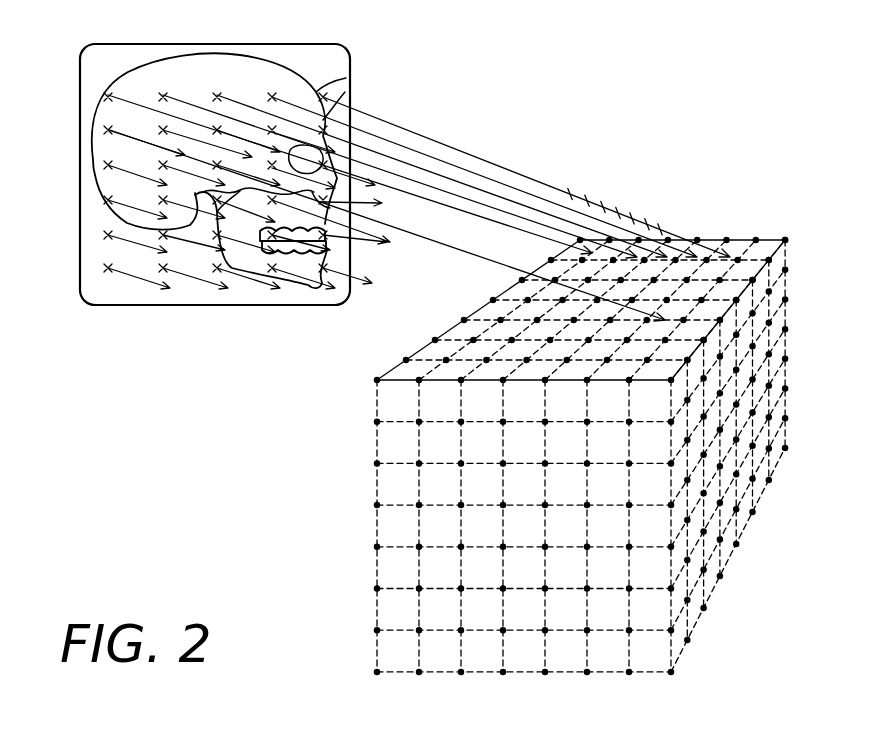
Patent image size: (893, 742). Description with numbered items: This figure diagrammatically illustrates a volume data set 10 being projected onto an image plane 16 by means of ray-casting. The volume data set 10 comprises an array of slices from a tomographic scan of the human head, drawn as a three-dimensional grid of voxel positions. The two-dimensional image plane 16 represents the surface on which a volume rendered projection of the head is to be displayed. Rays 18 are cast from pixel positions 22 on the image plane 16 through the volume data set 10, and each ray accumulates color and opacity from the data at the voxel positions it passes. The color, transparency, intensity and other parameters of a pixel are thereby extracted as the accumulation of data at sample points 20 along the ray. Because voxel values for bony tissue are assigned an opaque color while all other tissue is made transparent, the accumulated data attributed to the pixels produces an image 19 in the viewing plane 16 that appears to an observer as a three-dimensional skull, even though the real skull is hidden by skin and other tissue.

The volume data set 10 is at (751, 538).
The image plane 16 is at (165, 40).
The rays 18 is at (478, 152).
The image 19 is at (252, 58).
The sample points 20 is at (607, 205).
The pixel positions 22 is at (336, 92).